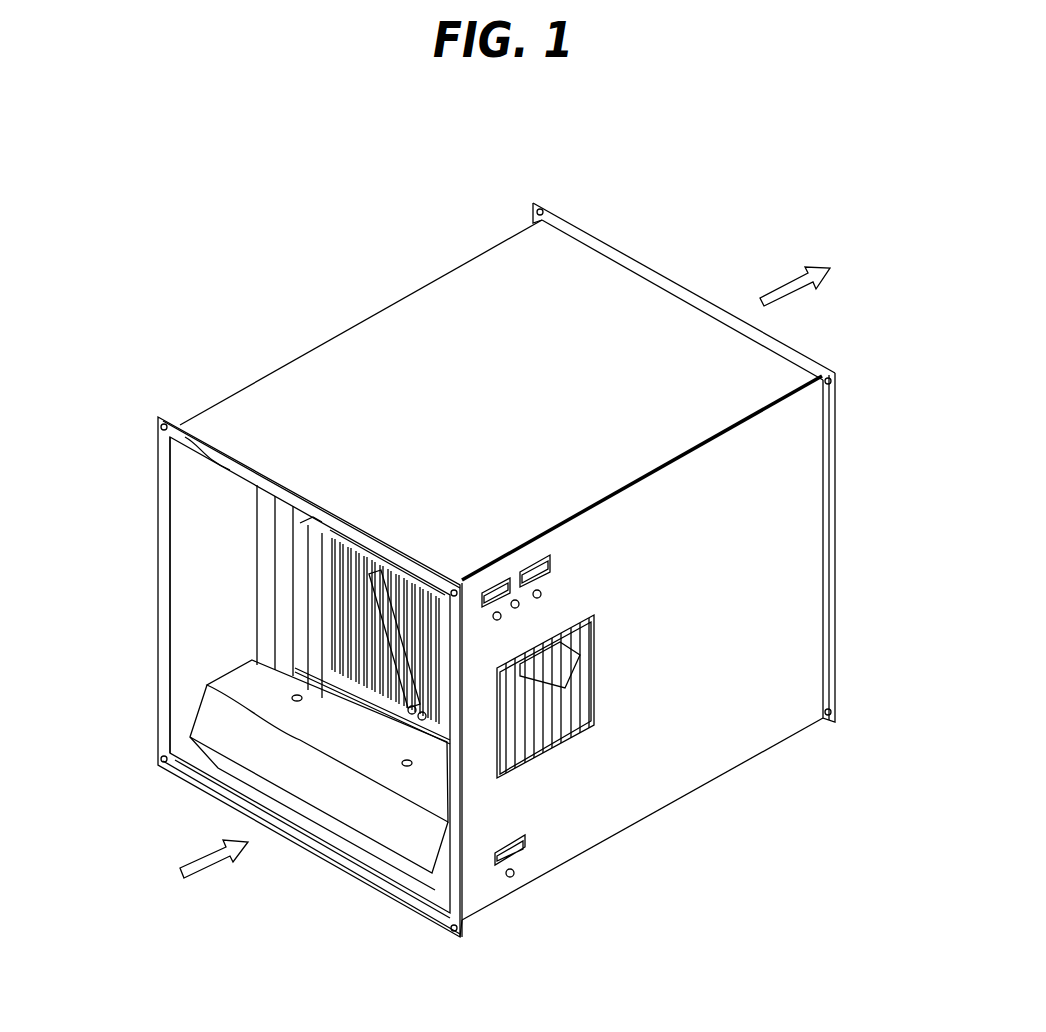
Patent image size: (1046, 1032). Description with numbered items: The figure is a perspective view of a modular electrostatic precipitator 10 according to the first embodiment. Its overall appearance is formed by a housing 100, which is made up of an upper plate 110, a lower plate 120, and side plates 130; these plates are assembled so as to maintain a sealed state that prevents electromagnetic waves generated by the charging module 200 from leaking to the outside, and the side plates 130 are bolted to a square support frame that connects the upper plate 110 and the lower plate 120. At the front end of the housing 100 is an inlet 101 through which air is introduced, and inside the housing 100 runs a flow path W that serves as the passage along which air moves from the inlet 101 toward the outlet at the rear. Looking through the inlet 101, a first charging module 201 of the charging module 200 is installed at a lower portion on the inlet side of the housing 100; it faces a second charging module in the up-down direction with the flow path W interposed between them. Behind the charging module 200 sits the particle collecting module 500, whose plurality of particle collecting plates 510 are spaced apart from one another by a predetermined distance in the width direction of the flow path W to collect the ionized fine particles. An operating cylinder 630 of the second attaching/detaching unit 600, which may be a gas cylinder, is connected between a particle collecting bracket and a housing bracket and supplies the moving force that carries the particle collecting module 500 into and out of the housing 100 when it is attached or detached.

The modular electrostatic precipitator 10 is at (420, 182).
The housing 100 is at (898, 410).
The upper plate 110 is at (738, 403).
The side plates 130 is at (807, 540).
The lower plate 120 is at (747, 757).
The inlet 101 is at (212, 462).
The flow path W is at (228, 568).
The particle collecting plate 510 is at (350, 638).
The particle collecting module 500 is at (245, 604).
The operating cylinder 630 is at (387, 640).
The second attaching/detaching unit 600 is at (234, 656).
The first charging module 201 is at (410, 855).
The charging module 200 is at (312, 789).